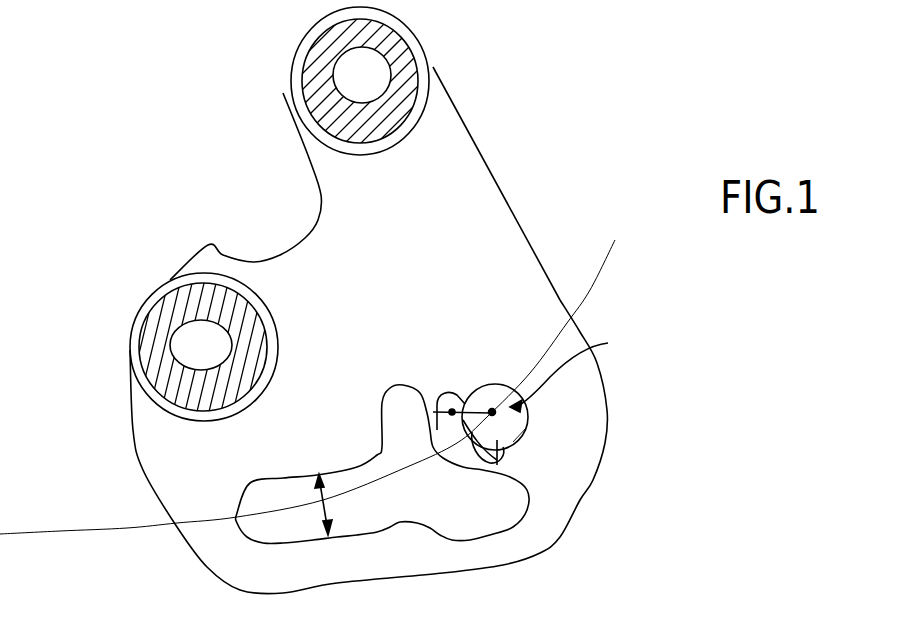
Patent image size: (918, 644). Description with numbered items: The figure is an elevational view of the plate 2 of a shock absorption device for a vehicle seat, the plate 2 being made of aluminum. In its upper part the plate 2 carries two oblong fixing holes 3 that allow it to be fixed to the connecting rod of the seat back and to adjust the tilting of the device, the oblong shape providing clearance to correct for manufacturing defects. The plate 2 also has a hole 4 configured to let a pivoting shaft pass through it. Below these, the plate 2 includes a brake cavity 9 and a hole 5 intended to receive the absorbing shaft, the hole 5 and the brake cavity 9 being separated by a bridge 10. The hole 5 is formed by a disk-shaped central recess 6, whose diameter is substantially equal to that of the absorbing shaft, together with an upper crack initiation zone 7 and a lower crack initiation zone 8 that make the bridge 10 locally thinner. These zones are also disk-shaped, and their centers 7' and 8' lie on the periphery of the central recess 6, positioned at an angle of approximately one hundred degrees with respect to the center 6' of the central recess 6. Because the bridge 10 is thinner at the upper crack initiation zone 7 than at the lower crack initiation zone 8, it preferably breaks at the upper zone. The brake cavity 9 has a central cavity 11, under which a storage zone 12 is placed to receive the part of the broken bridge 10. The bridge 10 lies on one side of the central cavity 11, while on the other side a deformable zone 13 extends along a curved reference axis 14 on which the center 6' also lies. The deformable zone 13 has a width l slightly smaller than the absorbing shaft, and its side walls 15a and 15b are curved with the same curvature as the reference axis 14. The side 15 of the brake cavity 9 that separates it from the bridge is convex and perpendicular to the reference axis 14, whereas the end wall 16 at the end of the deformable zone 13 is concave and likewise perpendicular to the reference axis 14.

The plate 2 is at (478, 193).
The oblong fixing hole 3 is at (347, 68).
The hole 4 is at (302, 238).
The hole 5 is at (569, 372).
The central recess 6 is at (567, 413).
The center of the central recess 6' is at (495, 395).
The upper crack initiation zone 7 is at (461, 393).
The center of the upper crack initiation zone 7' is at (462, 370).
The lower crack initiation zone 8 is at (547, 473).
The center of the lower crack initiation zone 8' is at (551, 501).
The brake cavity 9 is at (390, 403).
The bridge 10 is at (417, 398).
The central cavity 11 is at (381, 447).
The storage zone 12 is at (482, 516).
The deformable zone 13 is at (267, 495).
The reference axis 14 is at (80, 530).
The side of the brake cavity 15 is at (442, 540).
The side wall 15a is at (285, 477).
The side wall 15b is at (287, 543).
The end wall 16 is at (237, 520).
The width l is at (323, 500).